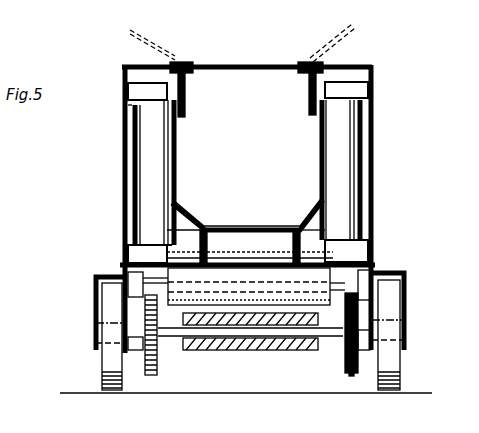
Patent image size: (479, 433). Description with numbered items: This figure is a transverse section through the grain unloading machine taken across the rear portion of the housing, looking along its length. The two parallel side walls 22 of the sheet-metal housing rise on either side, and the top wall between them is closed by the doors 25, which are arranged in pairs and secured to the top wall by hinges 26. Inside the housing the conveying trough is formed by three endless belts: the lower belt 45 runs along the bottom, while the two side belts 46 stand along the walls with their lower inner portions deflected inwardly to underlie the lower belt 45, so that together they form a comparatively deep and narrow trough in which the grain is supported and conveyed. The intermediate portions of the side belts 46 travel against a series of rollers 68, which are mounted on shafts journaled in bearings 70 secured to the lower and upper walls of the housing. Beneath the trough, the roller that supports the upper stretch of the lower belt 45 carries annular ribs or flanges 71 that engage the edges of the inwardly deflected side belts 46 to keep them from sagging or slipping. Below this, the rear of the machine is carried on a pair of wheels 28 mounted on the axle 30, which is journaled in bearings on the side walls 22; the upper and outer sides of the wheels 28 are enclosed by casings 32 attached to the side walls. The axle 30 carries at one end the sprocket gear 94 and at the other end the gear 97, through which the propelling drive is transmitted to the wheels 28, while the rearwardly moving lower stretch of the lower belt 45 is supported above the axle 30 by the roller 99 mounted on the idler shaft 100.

The side walls 22 is at (130, 200).
The doors 25 is at (257, 65).
The hinges 26 is at (182, 60).
The wheels 28 is at (102, 369).
The axle 30 is at (336, 348).
The casings 32 is at (93, 312).
The lower belt 45 is at (240, 262).
The side belts 46 is at (170, 218).
The rollers 68 is at (145, 172).
The bearings 70 is at (140, 88).
The annular ribs or flanges 71 is at (205, 232).
The sprocket gear 94 is at (352, 375).
The gear 97 is at (158, 372).
The roller 99 is at (224, 352).
The idler shaft 100 is at (262, 350).